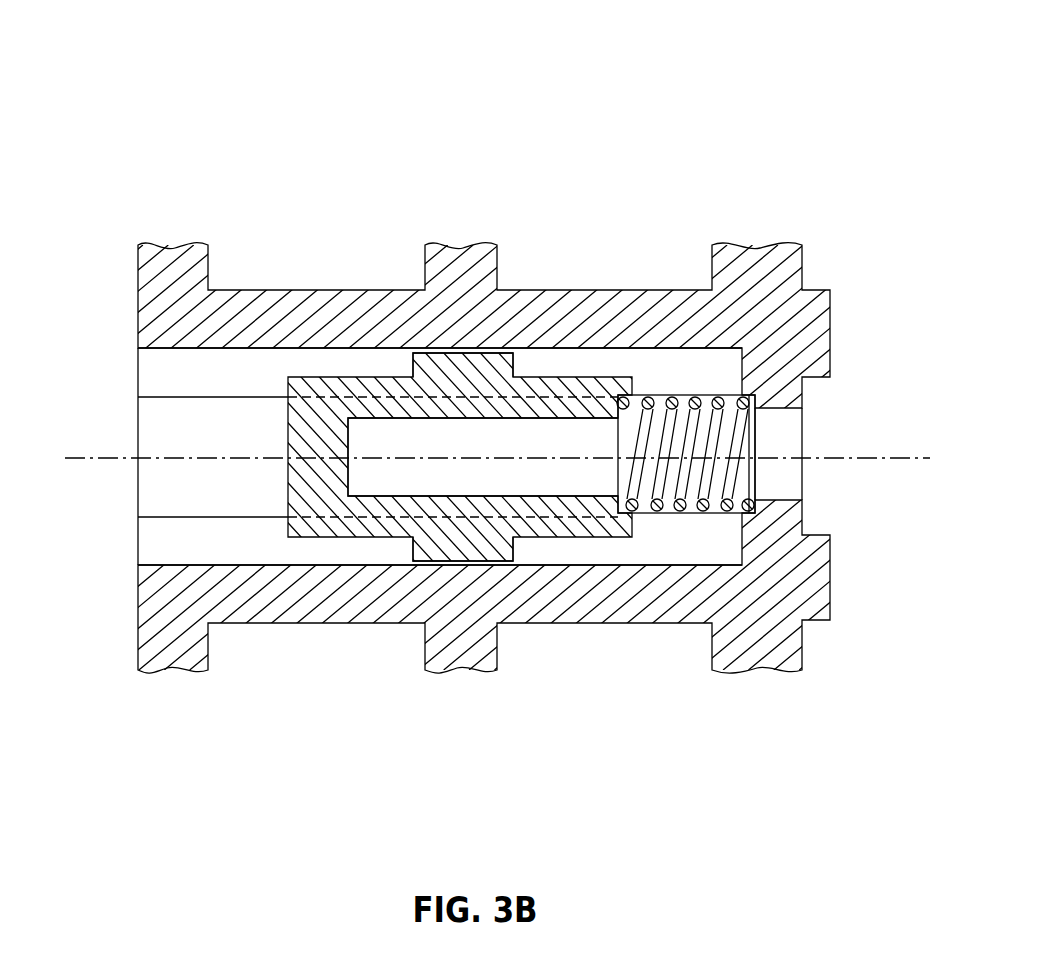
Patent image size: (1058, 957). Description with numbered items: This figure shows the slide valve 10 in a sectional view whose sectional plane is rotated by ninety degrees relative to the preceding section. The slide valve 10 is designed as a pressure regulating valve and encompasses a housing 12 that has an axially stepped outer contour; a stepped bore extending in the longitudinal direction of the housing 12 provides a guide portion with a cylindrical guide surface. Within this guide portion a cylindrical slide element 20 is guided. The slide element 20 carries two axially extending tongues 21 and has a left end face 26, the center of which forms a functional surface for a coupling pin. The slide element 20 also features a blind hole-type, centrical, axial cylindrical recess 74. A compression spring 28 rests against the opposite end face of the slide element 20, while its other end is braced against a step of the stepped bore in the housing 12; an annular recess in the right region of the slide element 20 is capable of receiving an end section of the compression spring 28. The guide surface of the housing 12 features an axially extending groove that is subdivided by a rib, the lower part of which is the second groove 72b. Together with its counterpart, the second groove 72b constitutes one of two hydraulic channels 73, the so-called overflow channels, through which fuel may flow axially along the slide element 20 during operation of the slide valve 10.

The slide valve 10 is at (710, 158).
The housing 12 is at (778, 273).
The slide element 20 is at (368, 390).
The tongues 21 is at (500, 362).
The left end face 26 is at (270, 500).
The compression spring 28 is at (713, 436).
The second groove 72b is at (163, 380).
The hydraulic channels 73 is at (163, 363).
The cylindrical recess 74 is at (543, 478).